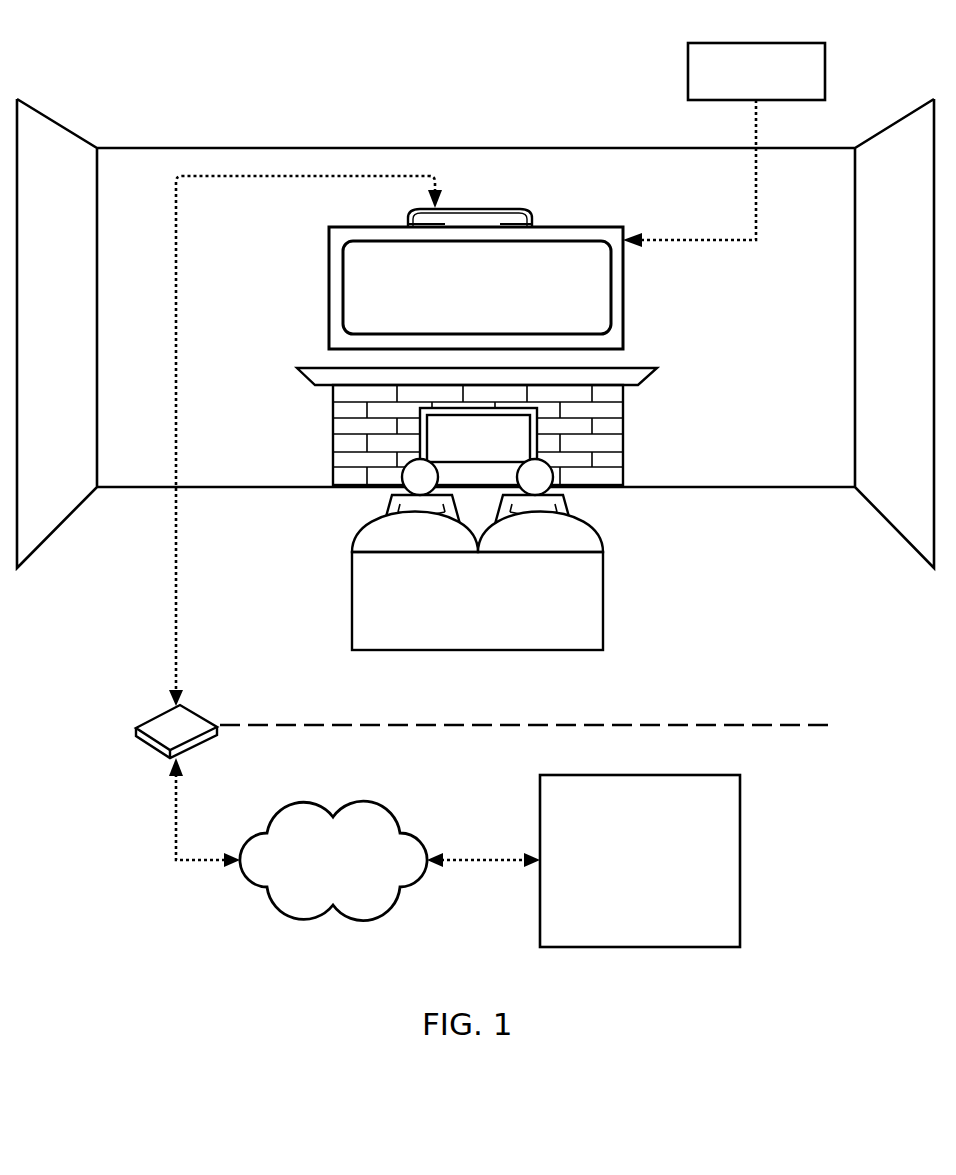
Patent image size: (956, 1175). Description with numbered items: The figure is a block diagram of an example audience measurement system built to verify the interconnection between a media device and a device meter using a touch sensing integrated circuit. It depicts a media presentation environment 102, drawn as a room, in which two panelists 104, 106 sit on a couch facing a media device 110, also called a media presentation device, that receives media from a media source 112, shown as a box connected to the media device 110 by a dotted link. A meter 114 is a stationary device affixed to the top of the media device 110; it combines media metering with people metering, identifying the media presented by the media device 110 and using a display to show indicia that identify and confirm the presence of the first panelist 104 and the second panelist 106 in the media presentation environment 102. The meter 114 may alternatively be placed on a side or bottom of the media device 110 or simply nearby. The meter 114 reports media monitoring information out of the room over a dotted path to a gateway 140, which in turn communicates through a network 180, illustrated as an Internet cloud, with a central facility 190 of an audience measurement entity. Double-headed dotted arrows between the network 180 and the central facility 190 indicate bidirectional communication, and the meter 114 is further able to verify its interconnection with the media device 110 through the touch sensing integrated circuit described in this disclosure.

The media presentation environment 102 is at (121, 124).
The panelist 104 is at (388, 512).
The panelist 106 is at (568, 512).
The media device 110 is at (329, 312).
The media source 112 is at (762, 43).
The meter 114 is at (528, 222).
The gateway 140 is at (144, 750).
The network 180 is at (272, 905).
The central facility 190 is at (741, 800).